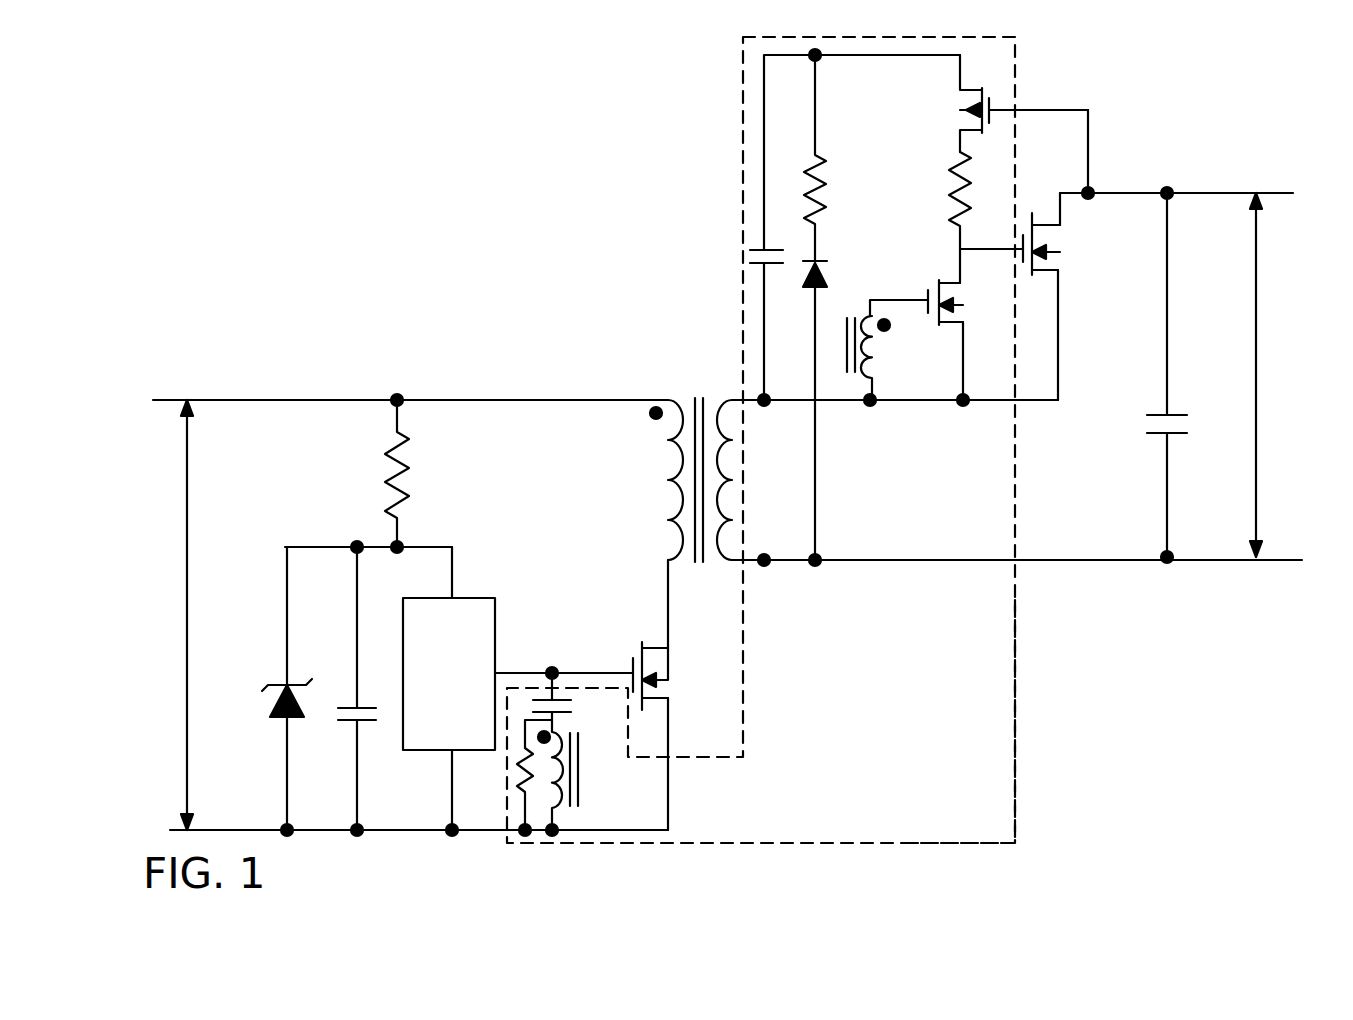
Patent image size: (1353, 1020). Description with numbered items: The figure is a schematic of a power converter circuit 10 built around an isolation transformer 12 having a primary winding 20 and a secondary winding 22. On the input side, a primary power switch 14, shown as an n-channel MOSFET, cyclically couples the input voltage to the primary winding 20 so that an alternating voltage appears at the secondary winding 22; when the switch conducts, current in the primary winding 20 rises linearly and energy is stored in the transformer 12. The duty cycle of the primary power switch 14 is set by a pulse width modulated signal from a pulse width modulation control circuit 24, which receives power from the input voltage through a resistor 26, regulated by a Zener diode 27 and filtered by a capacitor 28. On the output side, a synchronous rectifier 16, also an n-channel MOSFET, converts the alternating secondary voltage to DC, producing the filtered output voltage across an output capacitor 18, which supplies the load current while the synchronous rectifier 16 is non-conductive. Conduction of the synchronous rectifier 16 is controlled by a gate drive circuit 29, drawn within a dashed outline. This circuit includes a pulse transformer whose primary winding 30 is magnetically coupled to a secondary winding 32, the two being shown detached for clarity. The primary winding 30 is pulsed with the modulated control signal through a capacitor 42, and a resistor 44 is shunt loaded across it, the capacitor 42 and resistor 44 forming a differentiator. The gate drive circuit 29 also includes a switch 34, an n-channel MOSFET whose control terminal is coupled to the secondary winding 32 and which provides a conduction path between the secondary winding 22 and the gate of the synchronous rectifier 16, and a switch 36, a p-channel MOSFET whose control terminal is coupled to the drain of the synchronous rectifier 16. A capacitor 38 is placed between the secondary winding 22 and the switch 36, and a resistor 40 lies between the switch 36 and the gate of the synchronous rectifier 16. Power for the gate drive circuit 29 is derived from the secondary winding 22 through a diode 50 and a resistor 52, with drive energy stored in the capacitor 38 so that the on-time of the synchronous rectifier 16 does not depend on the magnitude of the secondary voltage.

The power converter circuit 10 is at (377, 137).
The isolation transformer 12 is at (685, 370).
The primary power switch 14 is at (665, 676).
The synchronous rectifier 16 is at (1048, 245).
The output capacitor 18 is at (1178, 412).
The primary winding 20 is at (666, 490).
The secondary winding 22 is at (725, 493).
The PWM control circuit 24 is at (490, 598).
The resistor 26 is at (410, 483).
The Zener diode 27 is at (275, 690).
The capacitor 28 is at (362, 720).
The gate drive circuit 29 is at (1017, 703).
The primary winding 30 is at (582, 772).
The secondary winding 32 is at (880, 355).
The switch 34 is at (938, 302).
The switch 36 is at (958, 118).
The capacitor 38 is at (742, 259).
The resistor 40 is at (945, 200).
The capacitor 42 is at (568, 700).
The resistor 44 is at (523, 768).
The diode 50 is at (828, 285).
The resistor 52 is at (822, 207).